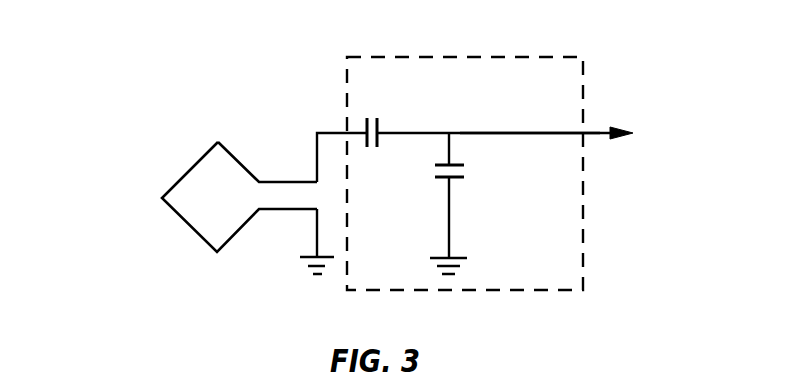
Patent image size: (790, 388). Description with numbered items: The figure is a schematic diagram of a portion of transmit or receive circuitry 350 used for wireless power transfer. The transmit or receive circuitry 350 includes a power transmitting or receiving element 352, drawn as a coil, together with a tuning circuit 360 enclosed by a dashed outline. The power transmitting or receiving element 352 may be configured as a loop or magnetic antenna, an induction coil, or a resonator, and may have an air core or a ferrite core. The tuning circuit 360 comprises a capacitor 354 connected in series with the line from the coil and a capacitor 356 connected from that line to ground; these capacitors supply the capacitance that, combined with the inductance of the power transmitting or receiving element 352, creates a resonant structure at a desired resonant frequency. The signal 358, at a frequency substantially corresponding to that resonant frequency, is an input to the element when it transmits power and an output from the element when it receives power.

The transmit or receive circuitry 350 is at (237, 44).
The power transmitting or receiving element 352 is at (190, 167).
The capacitor 354 is at (378, 122).
The capacitor 356 is at (456, 180).
The signal 358 is at (483, 131).
The tuning circuit 360 is at (563, 57).